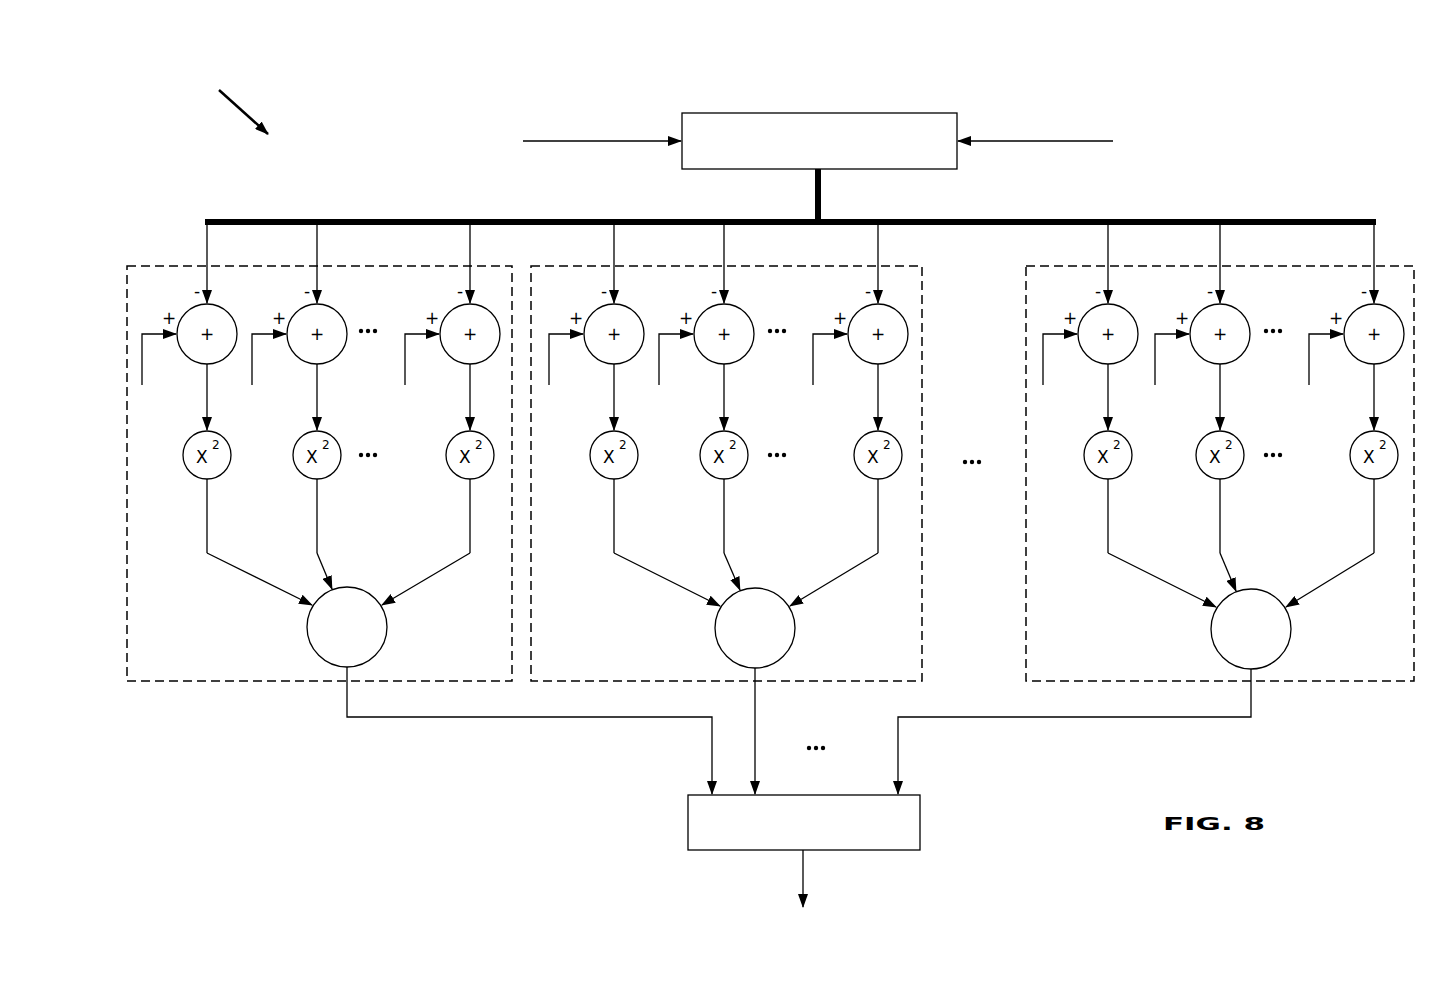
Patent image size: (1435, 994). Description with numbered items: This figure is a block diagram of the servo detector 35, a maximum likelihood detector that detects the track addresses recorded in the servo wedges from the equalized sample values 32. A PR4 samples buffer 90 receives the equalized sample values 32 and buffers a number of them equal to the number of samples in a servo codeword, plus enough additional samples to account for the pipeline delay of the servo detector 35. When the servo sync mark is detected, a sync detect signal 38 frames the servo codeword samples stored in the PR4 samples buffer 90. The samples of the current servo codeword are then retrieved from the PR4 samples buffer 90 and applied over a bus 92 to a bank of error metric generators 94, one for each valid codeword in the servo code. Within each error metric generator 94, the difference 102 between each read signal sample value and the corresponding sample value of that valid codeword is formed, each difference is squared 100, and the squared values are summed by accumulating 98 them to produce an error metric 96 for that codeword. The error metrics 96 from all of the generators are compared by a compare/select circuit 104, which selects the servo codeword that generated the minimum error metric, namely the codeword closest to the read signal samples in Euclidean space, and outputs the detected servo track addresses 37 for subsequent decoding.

The servo detector 35 is at (228, 85).
The equalized sample values 32 is at (608, 141).
The sync detect signal 38 is at (1017, 141).
The PR4 samples buffer 90 is at (903, 169).
The bus 92 is at (648, 220).
The error metric generator 94 is at (165, 656).
The difference 102 is at (227, 317).
The squared 100 is at (220, 465).
The accumulating 98 is at (353, 589).
The error metric 96 is at (1075, 719).
The compare/select circuit 104 is at (688, 823).
The detected servo track addresses 37 is at (805, 862).